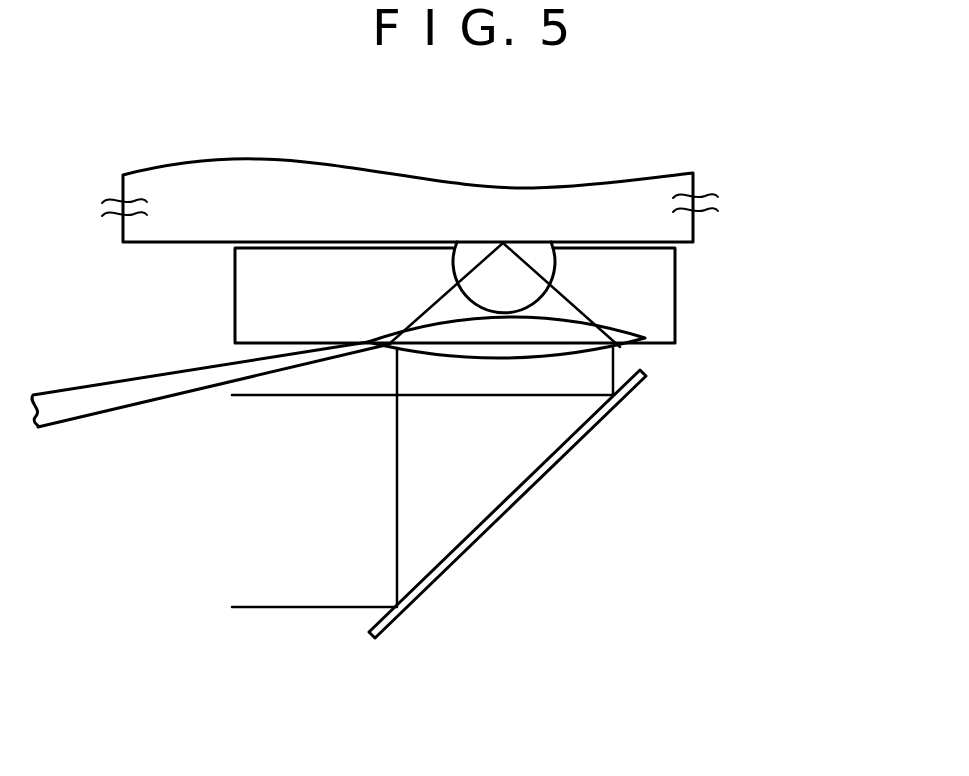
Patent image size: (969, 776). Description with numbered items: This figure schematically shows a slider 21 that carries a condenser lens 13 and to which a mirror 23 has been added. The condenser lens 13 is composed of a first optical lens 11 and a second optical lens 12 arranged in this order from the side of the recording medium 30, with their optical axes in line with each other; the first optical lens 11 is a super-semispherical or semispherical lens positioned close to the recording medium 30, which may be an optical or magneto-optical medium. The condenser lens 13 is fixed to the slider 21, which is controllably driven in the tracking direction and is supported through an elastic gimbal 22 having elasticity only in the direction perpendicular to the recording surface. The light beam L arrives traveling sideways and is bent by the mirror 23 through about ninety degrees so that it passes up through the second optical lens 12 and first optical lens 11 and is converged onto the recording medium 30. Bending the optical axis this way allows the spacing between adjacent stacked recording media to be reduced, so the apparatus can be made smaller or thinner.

The recording medium 30 is at (570, 200).
The slider 21 is at (252, 293).
The condenser lens 13 is at (818, 240).
The first optical lens 11 is at (540, 263).
The second optical lens 12 is at (575, 338).
The gimbal 22 is at (158, 383).
The mirror 23 is at (507, 512).
The light beam L is at (312, 608).